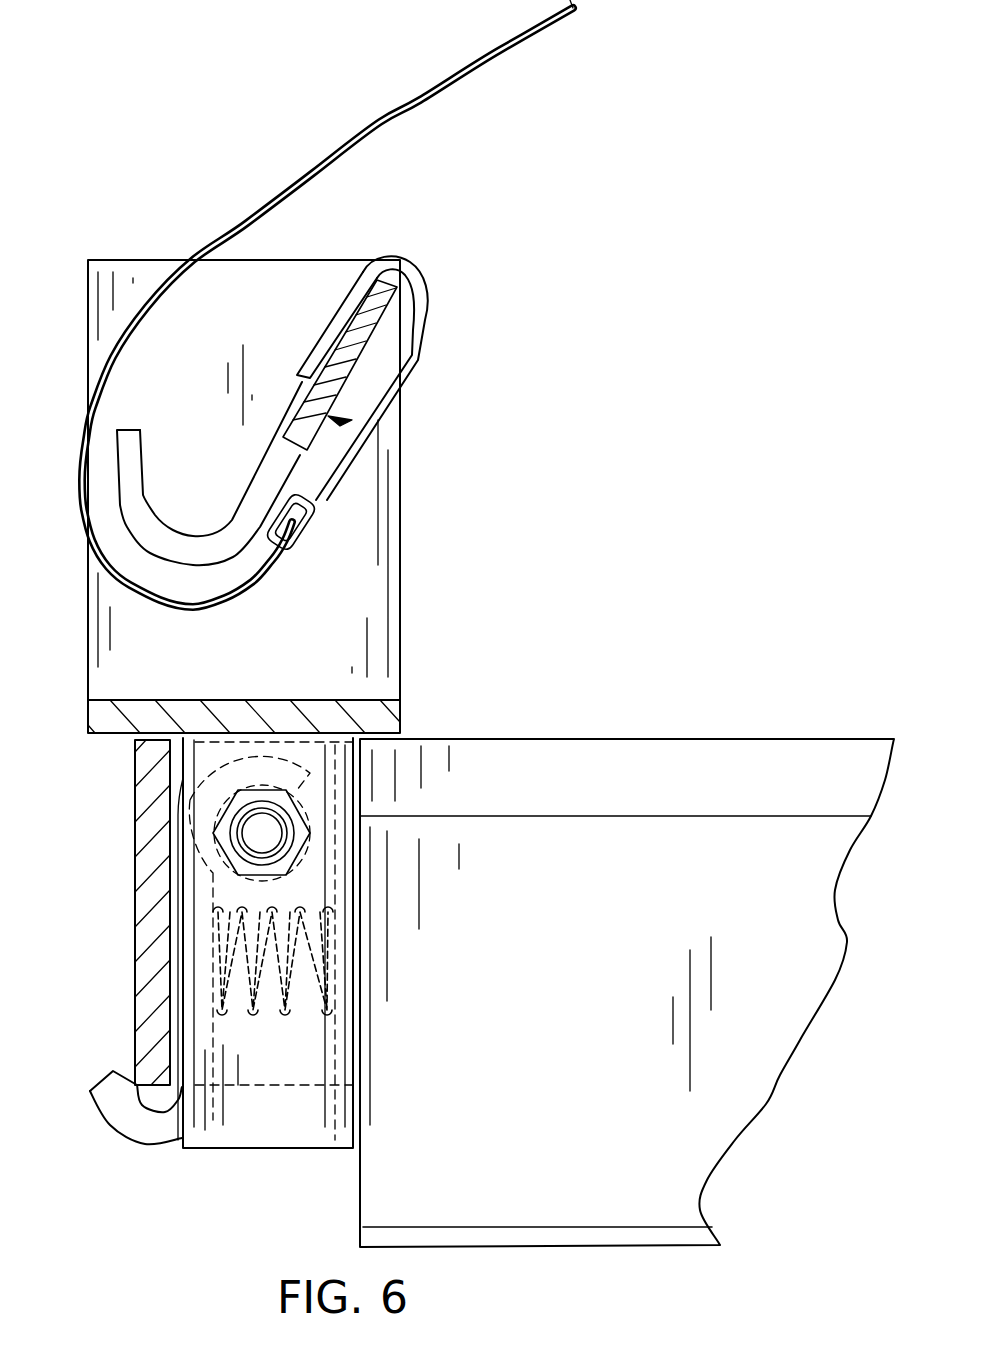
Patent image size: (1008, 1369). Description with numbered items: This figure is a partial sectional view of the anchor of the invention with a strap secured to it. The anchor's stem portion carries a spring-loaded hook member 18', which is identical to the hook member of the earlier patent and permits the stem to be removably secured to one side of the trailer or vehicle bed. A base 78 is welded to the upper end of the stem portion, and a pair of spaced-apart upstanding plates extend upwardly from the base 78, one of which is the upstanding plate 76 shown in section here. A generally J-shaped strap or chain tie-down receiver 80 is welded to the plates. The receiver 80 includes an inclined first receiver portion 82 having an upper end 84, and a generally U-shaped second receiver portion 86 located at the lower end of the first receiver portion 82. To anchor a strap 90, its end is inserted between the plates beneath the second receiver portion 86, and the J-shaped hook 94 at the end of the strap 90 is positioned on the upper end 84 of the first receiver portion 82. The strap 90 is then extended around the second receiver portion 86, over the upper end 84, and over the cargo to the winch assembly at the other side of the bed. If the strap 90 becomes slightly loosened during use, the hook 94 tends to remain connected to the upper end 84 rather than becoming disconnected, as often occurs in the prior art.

The strap 90 is at (420, 103).
The J-shaped hook 94 is at (340, 310).
The upper end 84 is at (393, 262).
The first receiver portion 82 is at (353, 352).
The strap or chain tie-down receiver 80 is at (348, 420).
The second receiver portion 86 is at (137, 482).
The upstanding plate 76 is at (330, 619).
The base 78 is at (362, 712).
The spring-loaded hook member 18' is at (125, 1154).